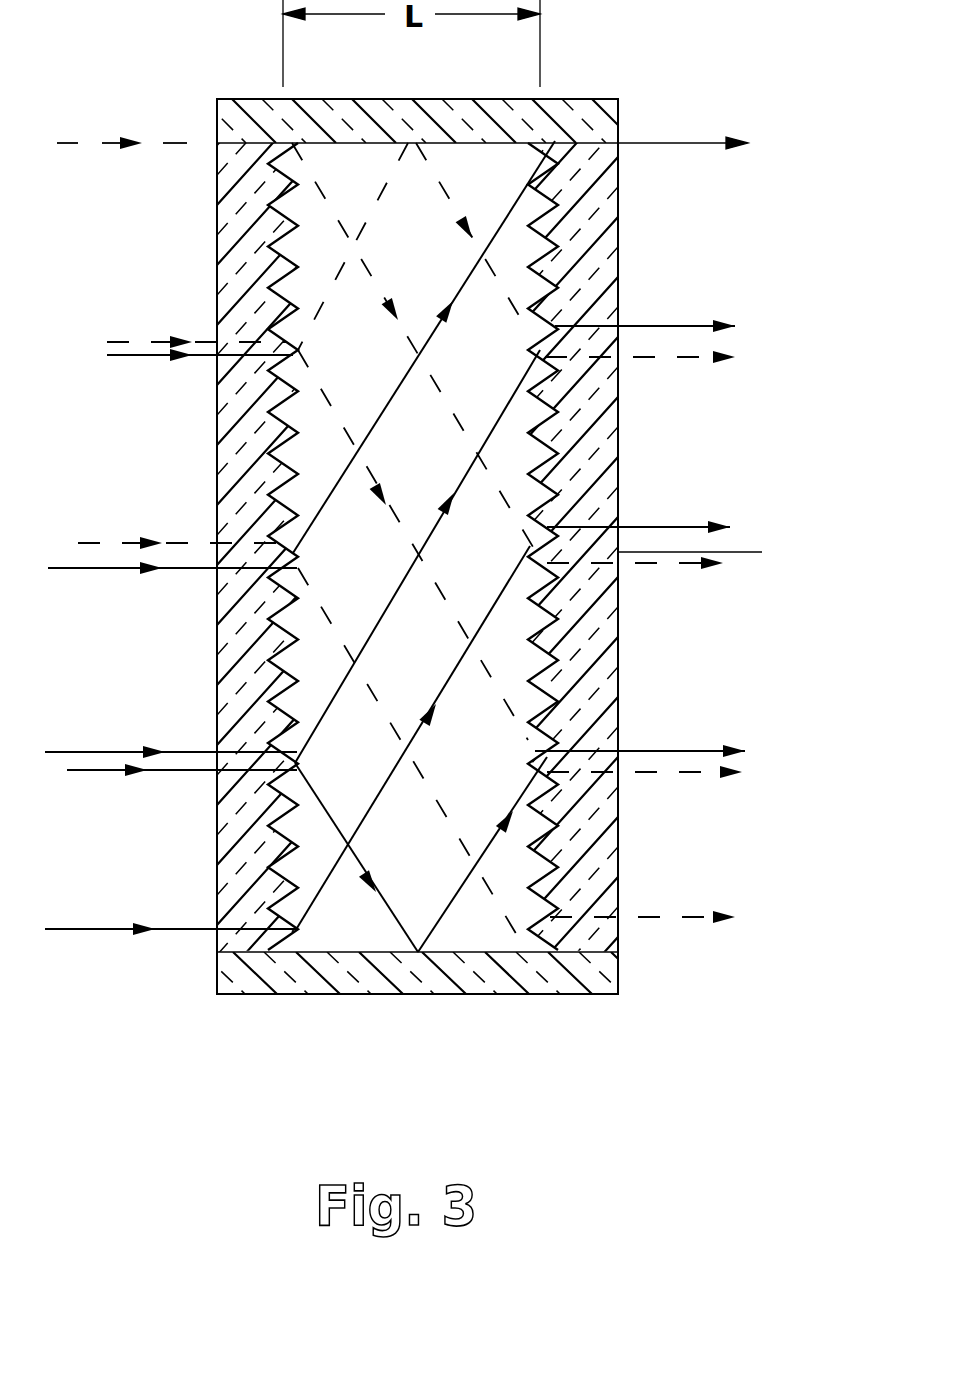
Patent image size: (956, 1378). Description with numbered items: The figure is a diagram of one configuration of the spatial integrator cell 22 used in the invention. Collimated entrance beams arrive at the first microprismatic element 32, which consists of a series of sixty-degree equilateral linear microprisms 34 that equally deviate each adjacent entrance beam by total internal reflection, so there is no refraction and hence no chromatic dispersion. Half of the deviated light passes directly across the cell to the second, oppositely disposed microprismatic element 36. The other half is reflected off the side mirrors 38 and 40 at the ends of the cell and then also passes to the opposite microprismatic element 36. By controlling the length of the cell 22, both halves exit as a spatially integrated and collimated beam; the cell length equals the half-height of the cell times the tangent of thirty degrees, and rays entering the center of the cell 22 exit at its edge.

The spatial integrator cell 22 is at (230, 1002).
The first microprismatic element 32 is at (222, 273).
The linear microprisms 34 is at (277, 428).
The second microprismatic element 36 is at (608, 263).
The side mirror 38 is at (375, 101).
The side mirror 40 is at (478, 976).